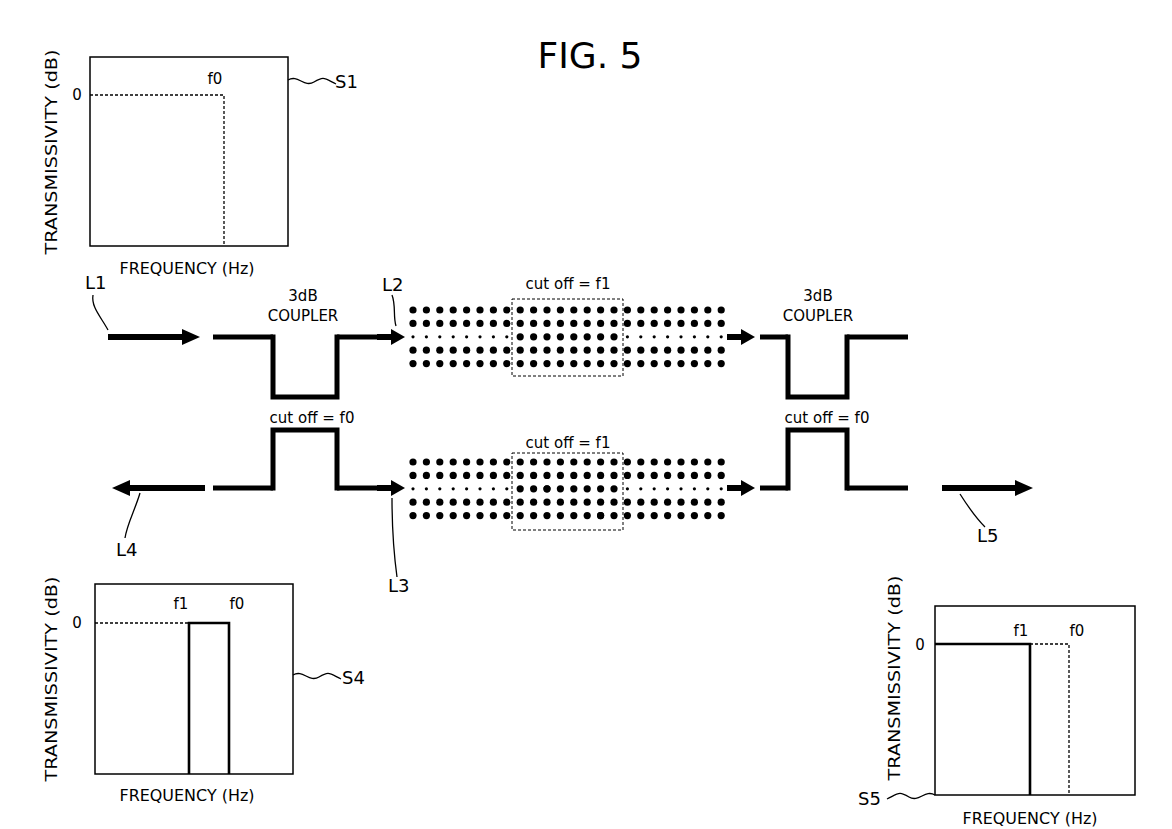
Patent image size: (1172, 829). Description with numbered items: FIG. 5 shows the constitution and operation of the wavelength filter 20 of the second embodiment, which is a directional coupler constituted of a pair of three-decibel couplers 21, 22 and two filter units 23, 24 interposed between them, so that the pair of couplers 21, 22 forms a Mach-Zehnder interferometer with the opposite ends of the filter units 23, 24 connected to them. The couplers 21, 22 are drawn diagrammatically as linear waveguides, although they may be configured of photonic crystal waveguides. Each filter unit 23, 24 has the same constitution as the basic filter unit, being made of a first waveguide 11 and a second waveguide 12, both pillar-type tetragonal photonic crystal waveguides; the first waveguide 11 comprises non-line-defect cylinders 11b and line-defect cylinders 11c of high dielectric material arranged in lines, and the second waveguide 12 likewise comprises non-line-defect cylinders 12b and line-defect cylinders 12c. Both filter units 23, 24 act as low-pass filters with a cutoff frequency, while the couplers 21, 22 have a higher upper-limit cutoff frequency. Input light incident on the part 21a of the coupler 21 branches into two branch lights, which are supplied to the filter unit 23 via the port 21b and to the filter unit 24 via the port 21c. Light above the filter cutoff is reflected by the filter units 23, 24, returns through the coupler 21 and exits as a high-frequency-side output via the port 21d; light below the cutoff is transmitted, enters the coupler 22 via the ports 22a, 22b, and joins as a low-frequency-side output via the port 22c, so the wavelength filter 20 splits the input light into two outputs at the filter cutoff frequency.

The wavelength filter 20 is at (684, 191).
The 3 dB coupler 21 is at (285, 423).
The part of 3 dB coupler 21a is at (218, 341).
The port 21b is at (358, 330).
The port 21c is at (348, 494).
The port 21d is at (218, 492).
The 3 dB coupler 22 is at (824, 415).
The port 22a is at (762, 333).
The port 22b is at (764, 494).
The port 22c is at (862, 494).
The first waveguide 11 is at (437, 306).
The non-line-defect cylinders 11b is at (646, 456).
The line-defect cylinders 11c is at (710, 490).
The second waveguide 12 is at (582, 522).
The non-line-defect cylinders 12b is at (602, 522).
The line-defect cylinders 12c is at (545, 494).
The filter unit 23 is at (566, 300).
The filter unit 24 is at (570, 498).